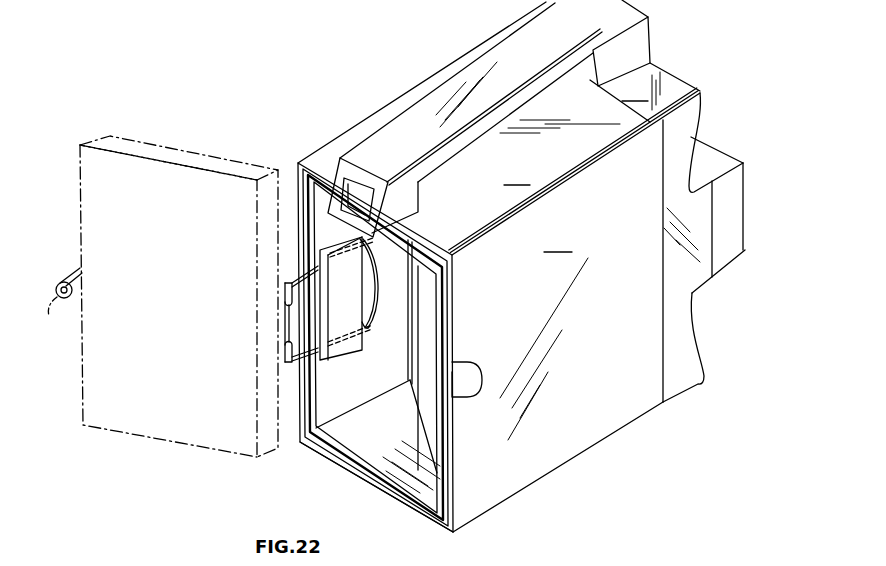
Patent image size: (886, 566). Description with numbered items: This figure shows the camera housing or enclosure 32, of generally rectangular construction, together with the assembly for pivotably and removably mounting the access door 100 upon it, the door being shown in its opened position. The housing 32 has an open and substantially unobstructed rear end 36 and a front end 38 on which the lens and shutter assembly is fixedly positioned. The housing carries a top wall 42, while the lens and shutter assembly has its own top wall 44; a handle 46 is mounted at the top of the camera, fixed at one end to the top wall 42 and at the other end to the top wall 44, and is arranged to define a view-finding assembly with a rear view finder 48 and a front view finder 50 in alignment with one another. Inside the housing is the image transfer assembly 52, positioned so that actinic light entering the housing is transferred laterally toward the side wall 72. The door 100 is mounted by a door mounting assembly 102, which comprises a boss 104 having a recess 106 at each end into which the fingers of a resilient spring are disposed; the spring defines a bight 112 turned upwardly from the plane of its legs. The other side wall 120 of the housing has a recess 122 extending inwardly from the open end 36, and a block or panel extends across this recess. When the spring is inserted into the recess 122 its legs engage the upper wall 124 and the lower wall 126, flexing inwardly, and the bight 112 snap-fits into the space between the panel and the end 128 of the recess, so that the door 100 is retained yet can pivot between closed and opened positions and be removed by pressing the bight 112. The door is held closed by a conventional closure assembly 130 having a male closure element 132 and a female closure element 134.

The housing 32 is at (544, 481).
The rear end 36 is at (417, 513).
The front end 38 is at (663, 373).
The top wall 42 is at (459, 94).
The top wall 44 is at (645, 92).
The handle 46 is at (490, 97).
The rear view finder 48 is at (358, 190).
The front view finder 50 is at (645, 43).
The image transfer assembly 52 is at (412, 416).
The side wall 72 is at (574, 264).
The access door 100 is at (147, 441).
The door mounting assembly 102 is at (347, 364).
The boss 104 is at (284, 322).
The recess 106 is at (283, 291).
The bight 112 is at (371, 299).
The side wall 120 is at (332, 347).
The recess 122 is at (376, 322).
The upper wall 124 is at (300, 268).
The lower wall 126 is at (306, 385).
The end 128 is at (364, 244).
The closure assembly 130 is at (64, 267).
The male closure element 132 is at (49, 313).
The female closure element 134 is at (466, 386).